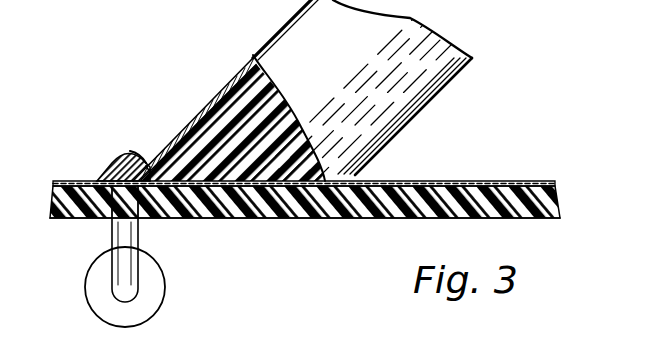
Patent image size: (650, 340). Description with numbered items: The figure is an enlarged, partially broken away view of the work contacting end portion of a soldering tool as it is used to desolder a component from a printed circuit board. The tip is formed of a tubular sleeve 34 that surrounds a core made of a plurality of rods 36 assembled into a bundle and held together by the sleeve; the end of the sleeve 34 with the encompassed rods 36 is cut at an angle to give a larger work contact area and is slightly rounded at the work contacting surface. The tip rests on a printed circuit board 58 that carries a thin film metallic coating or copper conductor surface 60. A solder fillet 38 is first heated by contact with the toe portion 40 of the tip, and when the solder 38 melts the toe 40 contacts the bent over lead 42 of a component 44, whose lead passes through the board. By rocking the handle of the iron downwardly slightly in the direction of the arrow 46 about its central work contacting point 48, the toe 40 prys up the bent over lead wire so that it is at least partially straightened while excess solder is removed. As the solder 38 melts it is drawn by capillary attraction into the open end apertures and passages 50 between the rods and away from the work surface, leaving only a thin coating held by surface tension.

The tubular sleeve 34 is at (280, 40).
The rods 36 is at (223, 118).
The solder fillet 38 is at (134, 150).
The toe portion 40 is at (148, 165).
The bent over lead 42 is at (112, 163).
The component 44 is at (162, 292).
The arrow 46 is at (477, 65).
The central work contacting point 48 is at (233, 190).
The open end apertures and passages 50 is at (283, 100).
The printed circuit board 58 is at (559, 207).
The copper conductor surface 60 is at (423, 184).